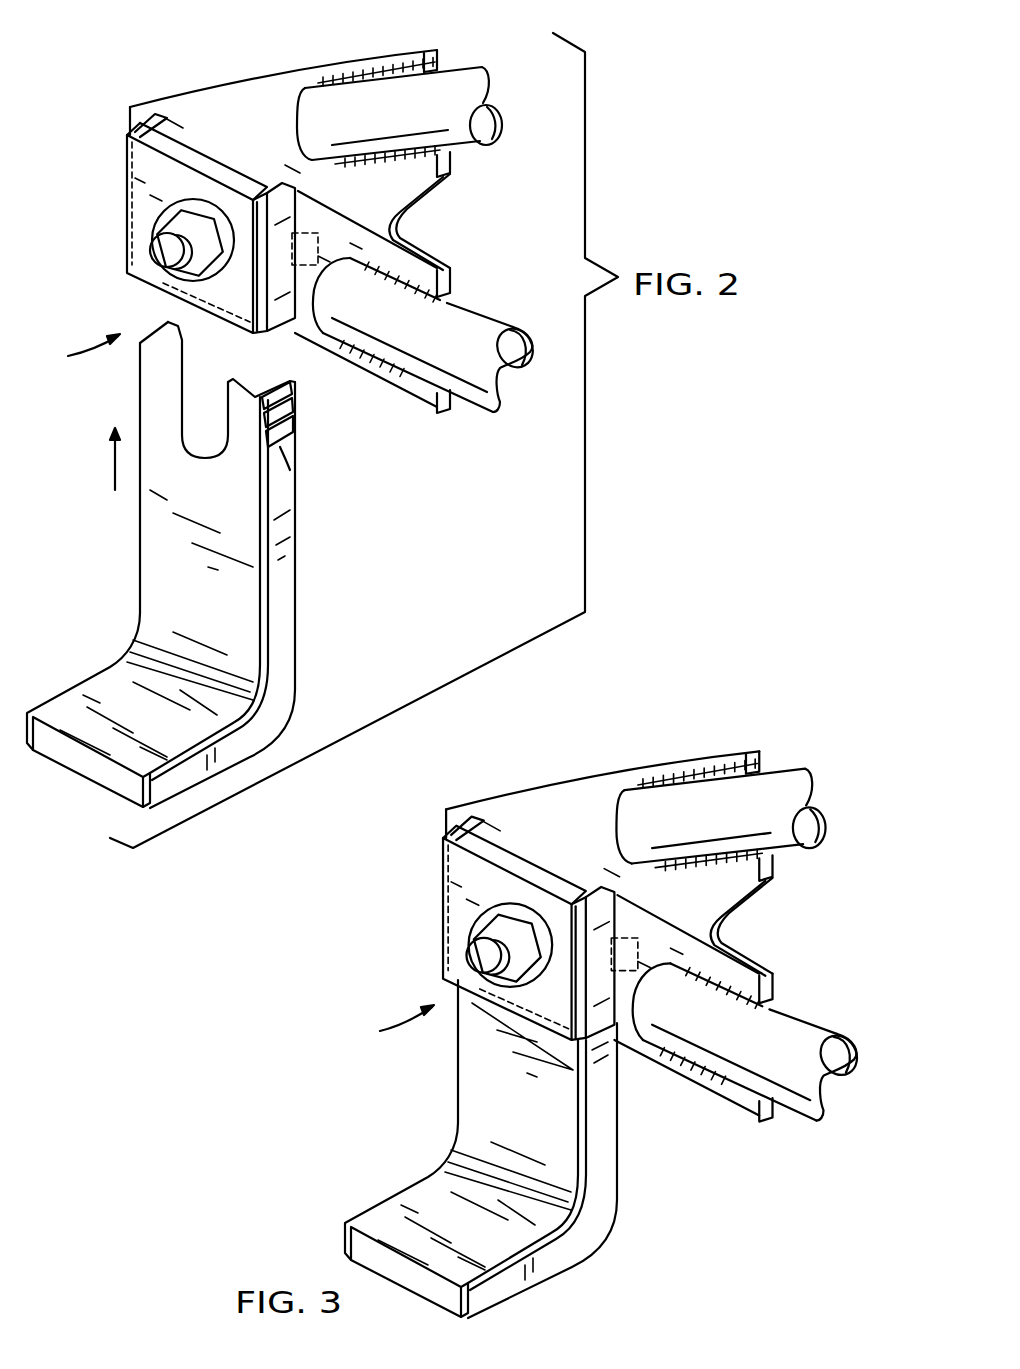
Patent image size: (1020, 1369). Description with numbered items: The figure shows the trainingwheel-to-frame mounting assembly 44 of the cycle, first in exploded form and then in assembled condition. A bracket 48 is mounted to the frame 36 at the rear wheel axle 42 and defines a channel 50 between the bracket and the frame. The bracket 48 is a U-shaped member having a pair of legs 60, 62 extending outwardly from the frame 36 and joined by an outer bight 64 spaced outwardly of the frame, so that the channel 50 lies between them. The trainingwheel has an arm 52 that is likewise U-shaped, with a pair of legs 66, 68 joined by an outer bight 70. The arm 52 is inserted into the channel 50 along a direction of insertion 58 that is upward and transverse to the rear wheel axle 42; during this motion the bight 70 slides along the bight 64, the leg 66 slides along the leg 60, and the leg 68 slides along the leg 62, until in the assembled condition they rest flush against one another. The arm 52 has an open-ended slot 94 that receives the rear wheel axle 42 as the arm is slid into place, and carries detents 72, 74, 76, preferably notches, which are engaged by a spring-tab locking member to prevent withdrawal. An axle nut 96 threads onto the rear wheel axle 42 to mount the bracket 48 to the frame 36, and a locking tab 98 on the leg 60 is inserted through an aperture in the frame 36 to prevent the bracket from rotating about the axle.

In FIG. 2, the frame 36 is at (275, 78).
In FIG. 3, the frame 36 is at (597, 782).
In FIG. 2, the rear wheel axle 42 is at (163, 255).
In FIG. 3, the rear wheel axle 42 is at (483, 956).
In FIG. 2, the trainingwheel-to-frame mounting assembly 44 is at (76, 352).
In FIG. 3, the trainingwheel-to-frame mounting assembly 44 is at (390, 1025).
In FIG. 2, the bracket 48 is at (137, 182).
In FIG. 3, the bracket 48 is at (452, 862).
In FIG. 2, the channel 50 is at (183, 146).
In FIG. 2, the arm 52 is at (140, 578).
In FIG. 3, the arm 52 is at (475, 1102).
In FIG. 2, the direction of insertion 58 is at (115, 462).
In FIG. 2, the leg 60 is at (262, 188).
In FIG. 2, the leg 62 is at (147, 118).
In FIG. 2, the outer bight 64 is at (195, 158).
In FIG. 2, the leg 66 is at (285, 597).
In FIG. 2, the leg 68 is at (160, 325).
In FIG. 2, the outer bight 70 is at (165, 352).
In FIG. 2, the detent 72 is at (292, 470).
In FIG. 2, the detent 74 is at (298, 430).
In FIG. 2, the detent 76 is at (295, 407).
In FIG. 2, the open-ended slot 94 is at (185, 410).
In FIG. 2, the axle nut 96 is at (160, 222).
In FIG. 3, the axle nut 96 is at (480, 923).
In FIG. 2, the locking tab 98 is at (330, 232).